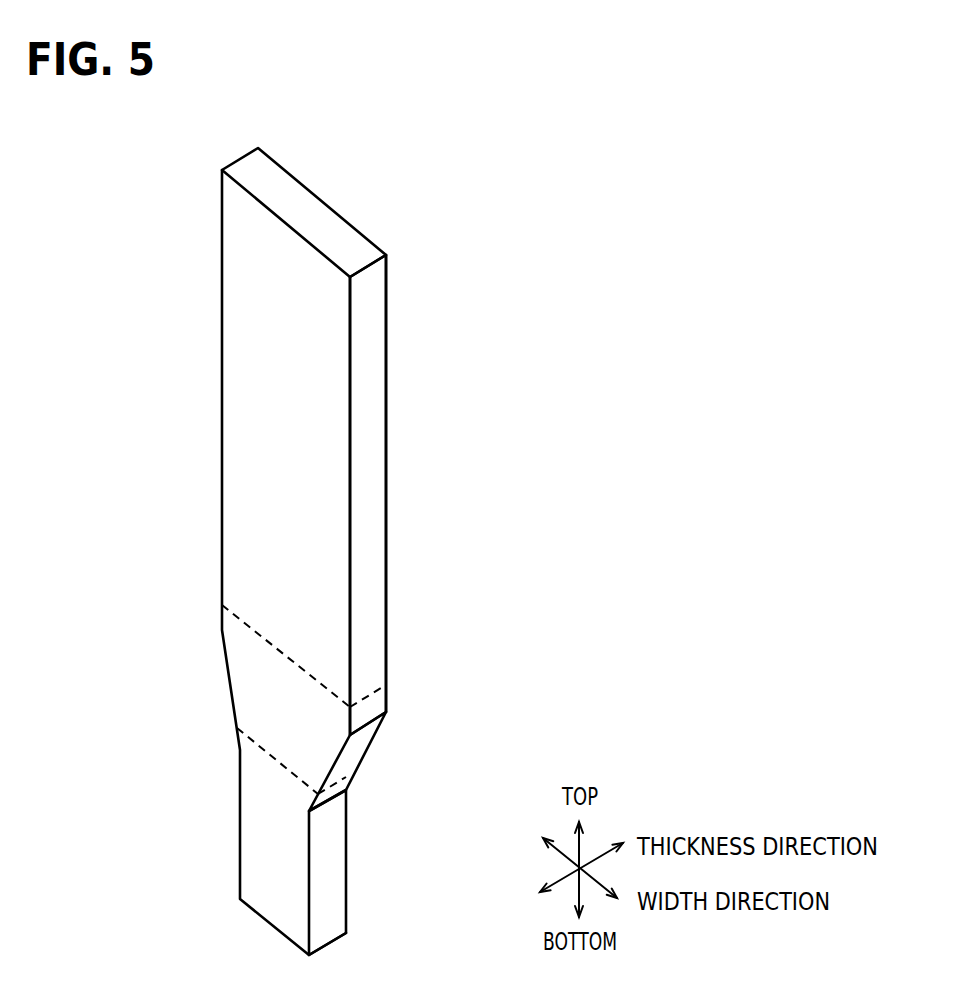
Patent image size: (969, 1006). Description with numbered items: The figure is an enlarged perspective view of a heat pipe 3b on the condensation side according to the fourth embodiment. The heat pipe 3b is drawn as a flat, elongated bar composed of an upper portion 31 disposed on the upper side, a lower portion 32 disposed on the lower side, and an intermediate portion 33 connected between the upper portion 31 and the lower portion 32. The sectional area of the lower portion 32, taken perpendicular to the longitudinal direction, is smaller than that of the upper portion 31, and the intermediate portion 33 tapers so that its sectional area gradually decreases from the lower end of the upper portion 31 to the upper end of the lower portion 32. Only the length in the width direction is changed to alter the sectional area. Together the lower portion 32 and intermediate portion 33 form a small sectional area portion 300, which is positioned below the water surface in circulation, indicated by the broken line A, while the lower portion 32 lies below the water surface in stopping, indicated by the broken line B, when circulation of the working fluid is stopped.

The heat pipe on the condensation side 3b is at (305, 551).
The upper portion 31 is at (368, 407).
The intermediate portion 33 is at (358, 745).
The lower portion 32 is at (377, 872).
The small sectional area portion 300 is at (411, 833).
The water surface in circulation A is at (255, 631).
The water surface in stopping B is at (265, 751).